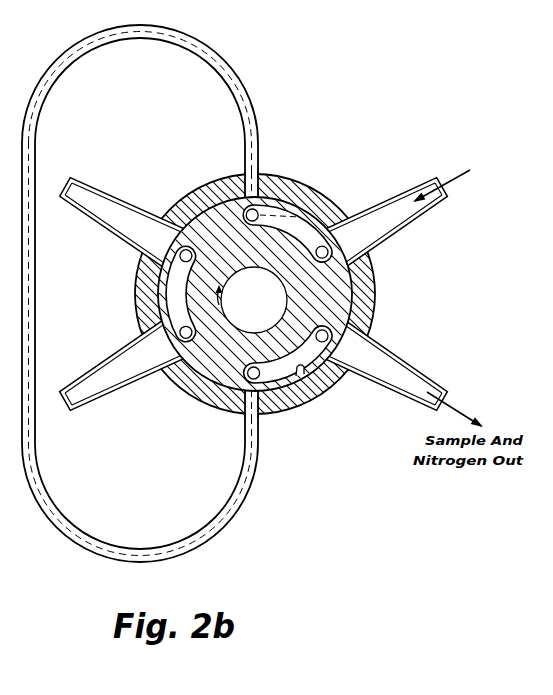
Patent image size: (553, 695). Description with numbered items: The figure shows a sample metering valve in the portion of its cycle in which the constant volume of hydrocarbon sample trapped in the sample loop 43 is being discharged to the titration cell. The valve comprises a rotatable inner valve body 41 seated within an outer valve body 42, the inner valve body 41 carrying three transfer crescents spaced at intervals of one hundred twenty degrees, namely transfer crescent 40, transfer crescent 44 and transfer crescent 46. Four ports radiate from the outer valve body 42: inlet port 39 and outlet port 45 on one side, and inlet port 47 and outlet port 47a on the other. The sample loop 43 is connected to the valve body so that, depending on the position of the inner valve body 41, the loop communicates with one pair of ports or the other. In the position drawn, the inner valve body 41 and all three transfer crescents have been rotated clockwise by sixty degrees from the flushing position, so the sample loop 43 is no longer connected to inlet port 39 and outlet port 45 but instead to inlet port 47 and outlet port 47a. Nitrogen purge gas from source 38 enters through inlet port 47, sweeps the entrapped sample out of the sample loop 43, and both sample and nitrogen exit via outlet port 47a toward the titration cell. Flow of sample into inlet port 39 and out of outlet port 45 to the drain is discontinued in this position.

The nitrogen purge gas source 38 is at (449, 184).
The inlet port 39 is at (98, 192).
The transfer crescent 40 is at (293, 220).
The inner valve body 41 is at (262, 302).
The outer valve body 42 is at (287, 177).
The sample loop 43 is at (208, 50).
The transfer crescent 44 is at (165, 296).
The outlet port 45 is at (102, 366).
The transfer crescent 46 is at (302, 375).
The inlet port 47 is at (390, 235).
The outlet port 47a is at (397, 355).